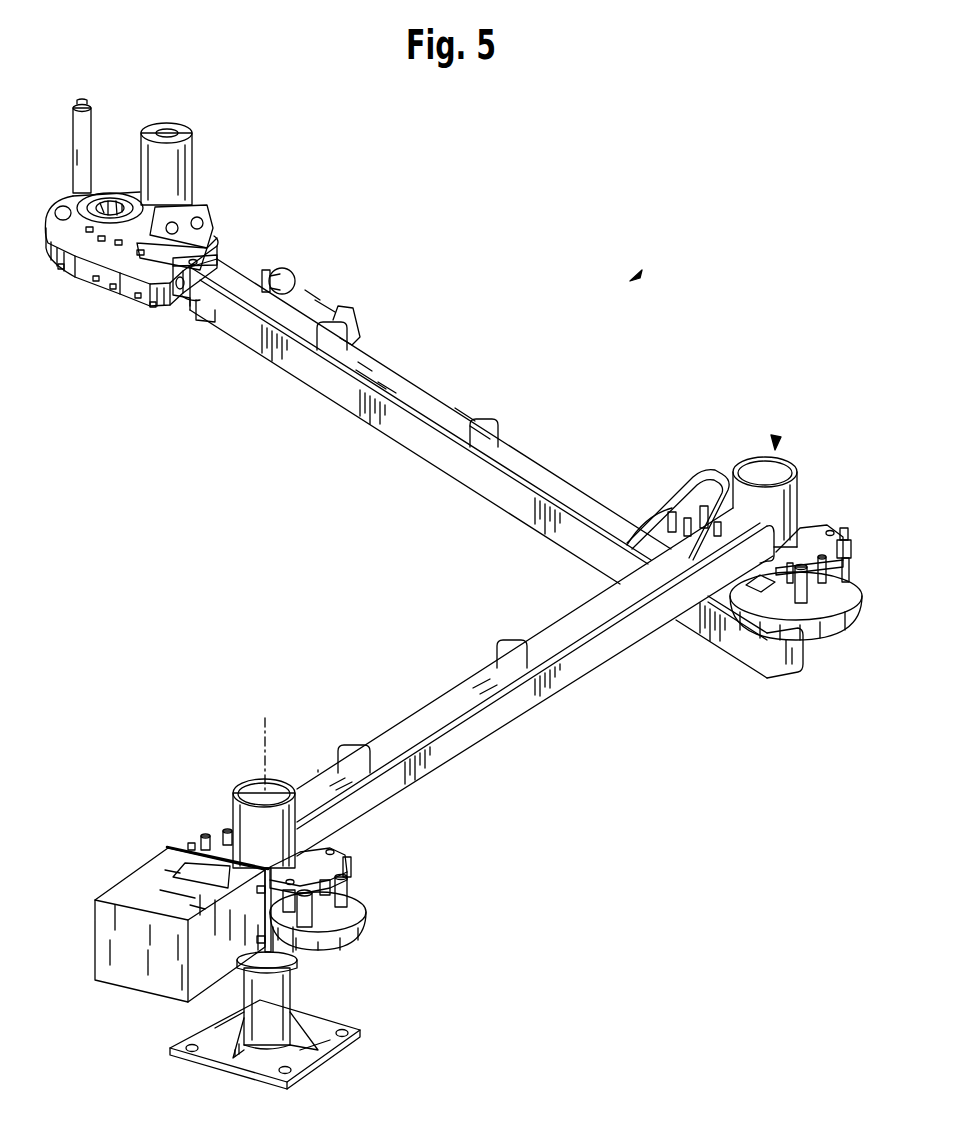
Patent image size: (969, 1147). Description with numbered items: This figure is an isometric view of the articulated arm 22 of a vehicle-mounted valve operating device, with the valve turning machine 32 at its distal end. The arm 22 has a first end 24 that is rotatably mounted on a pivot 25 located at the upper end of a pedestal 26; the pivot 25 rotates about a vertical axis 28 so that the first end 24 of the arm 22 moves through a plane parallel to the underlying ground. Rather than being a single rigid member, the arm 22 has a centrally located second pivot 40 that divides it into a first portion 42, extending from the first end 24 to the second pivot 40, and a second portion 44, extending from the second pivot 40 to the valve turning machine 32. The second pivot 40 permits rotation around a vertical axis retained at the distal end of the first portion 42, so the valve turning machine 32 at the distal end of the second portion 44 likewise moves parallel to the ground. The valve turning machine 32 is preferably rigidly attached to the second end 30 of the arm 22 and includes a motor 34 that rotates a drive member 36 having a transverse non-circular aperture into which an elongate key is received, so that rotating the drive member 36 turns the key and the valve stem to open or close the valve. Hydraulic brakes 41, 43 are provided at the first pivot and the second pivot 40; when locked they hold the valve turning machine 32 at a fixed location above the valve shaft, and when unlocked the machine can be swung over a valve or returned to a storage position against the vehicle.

The arm 22 is at (636, 274).
The first end 24 is at (318, 772).
The pivot 25 is at (233, 808).
The pedestal 26 is at (292, 982).
The vertical axis 28 is at (262, 747).
The second end 30 is at (180, 300).
The valve turning machine 32 is at (88, 258).
The motor 34 is at (215, 178).
The drive member 36 is at (105, 196).
The second pivot 40 is at (776, 440).
The hydraulic brake 41 is at (360, 890).
The first portion 42 is at (488, 740).
The hydraulic brake 43 is at (850, 592).
The second portion 44 is at (382, 430).